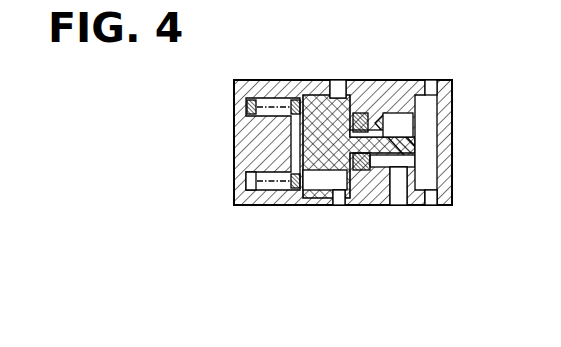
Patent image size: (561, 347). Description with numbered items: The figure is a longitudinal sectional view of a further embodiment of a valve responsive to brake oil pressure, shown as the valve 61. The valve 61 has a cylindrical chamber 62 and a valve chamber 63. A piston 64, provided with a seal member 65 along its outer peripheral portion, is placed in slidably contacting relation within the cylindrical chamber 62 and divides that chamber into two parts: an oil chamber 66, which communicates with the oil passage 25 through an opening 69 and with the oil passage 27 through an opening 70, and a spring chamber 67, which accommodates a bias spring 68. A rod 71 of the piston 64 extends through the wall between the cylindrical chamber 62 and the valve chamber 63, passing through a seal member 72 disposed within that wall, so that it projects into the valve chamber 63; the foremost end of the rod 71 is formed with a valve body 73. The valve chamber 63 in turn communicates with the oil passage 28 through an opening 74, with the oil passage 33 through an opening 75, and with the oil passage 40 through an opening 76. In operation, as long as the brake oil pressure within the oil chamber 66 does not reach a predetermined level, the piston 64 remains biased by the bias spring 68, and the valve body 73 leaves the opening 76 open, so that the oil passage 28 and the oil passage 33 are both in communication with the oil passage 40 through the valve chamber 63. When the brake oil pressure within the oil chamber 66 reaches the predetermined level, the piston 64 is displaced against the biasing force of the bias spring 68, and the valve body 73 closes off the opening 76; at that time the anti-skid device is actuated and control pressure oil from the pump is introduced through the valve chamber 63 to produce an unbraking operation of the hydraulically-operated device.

The oil passage 25 is at (337, 212).
The oil passage 27 is at (335, 78).
The oil passage 28 is at (432, 212).
The oil passage 33 is at (428, 78).
The oil passage 40 is at (397, 206).
The valve responsive to brake oil pressure 61 is at (382, 74).
The cylindrical chamber 62 is at (282, 86).
The valve chamber 63 is at (446, 120).
The piston 64 is at (342, 158).
The seal member 65 is at (315, 196).
The oil chamber 66 is at (347, 184).
The spring chamber 67 is at (297, 139).
The bias spring 68 is at (254, 188).
The opening 69 is at (347, 200).
The opening 70 is at (339, 84).
The rod 71 is at (395, 120).
The seal member 72 is at (357, 121).
The valve body 73 is at (420, 148).
The opening 74 is at (435, 204).
The opening 75 is at (431, 84).
The opening 76 is at (400, 203).